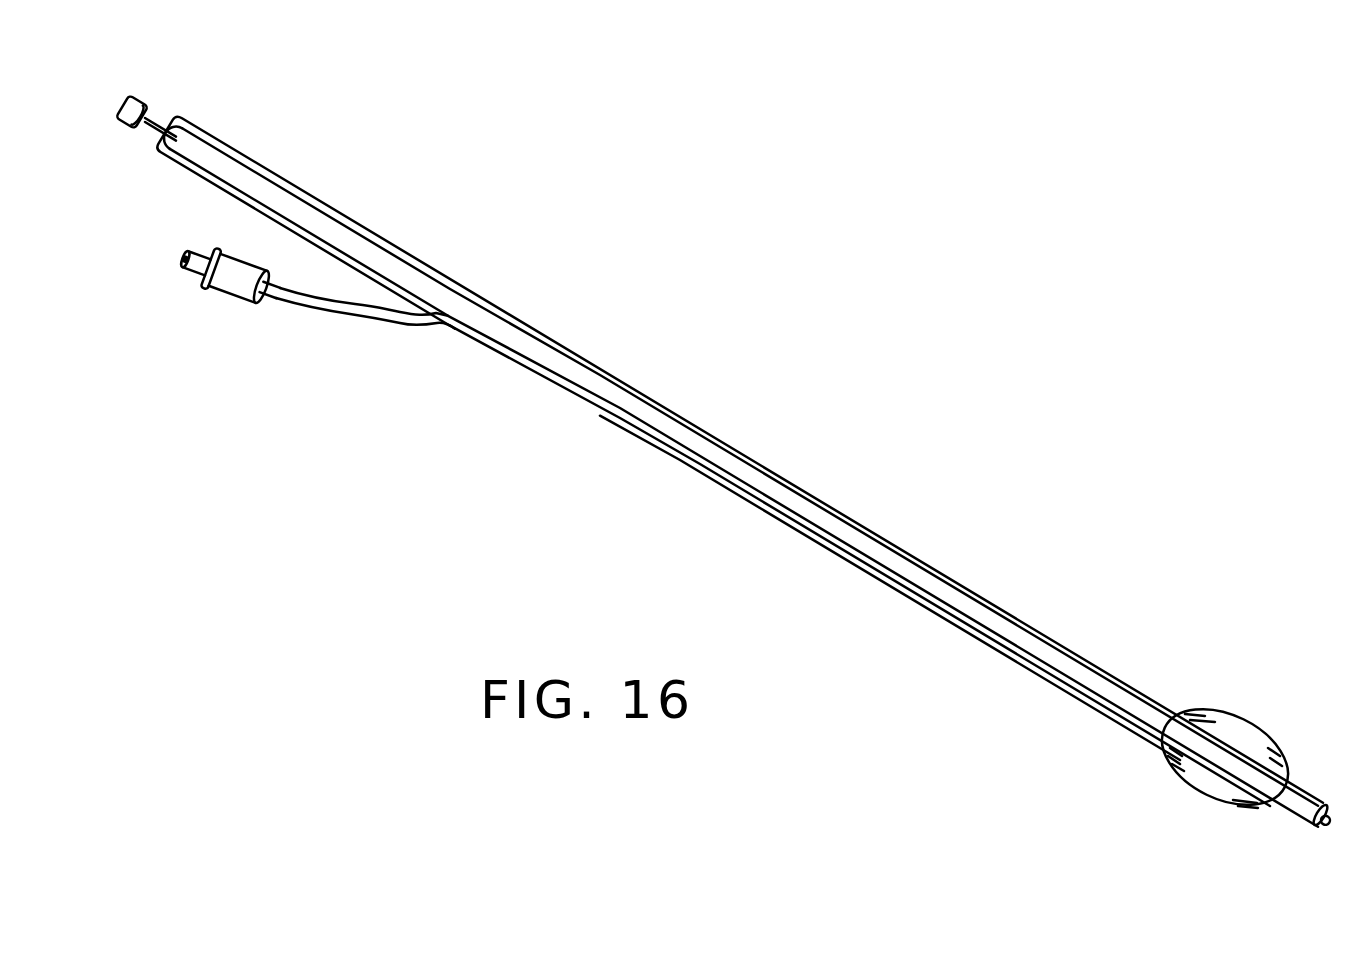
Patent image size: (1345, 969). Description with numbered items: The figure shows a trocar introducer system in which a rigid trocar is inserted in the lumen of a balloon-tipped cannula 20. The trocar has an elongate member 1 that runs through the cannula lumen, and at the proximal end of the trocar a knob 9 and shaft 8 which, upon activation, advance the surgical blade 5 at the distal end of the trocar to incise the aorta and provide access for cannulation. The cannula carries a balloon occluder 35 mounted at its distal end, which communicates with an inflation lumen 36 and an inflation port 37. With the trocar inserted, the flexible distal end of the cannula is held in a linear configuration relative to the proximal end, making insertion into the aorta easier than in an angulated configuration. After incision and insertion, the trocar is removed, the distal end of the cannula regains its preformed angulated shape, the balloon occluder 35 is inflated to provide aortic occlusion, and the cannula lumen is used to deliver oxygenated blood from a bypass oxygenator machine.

The elongate member 1 is at (860, 538).
The surgical blade 5 is at (1327, 826).
The shaft 8 is at (150, 128).
The knob 9 is at (139, 101).
The cannula 20 is at (745, 457).
The balloon occluder 35 is at (1238, 724).
The inflation lumen 36 is at (906, 592).
The inflation port 37 is at (230, 300).